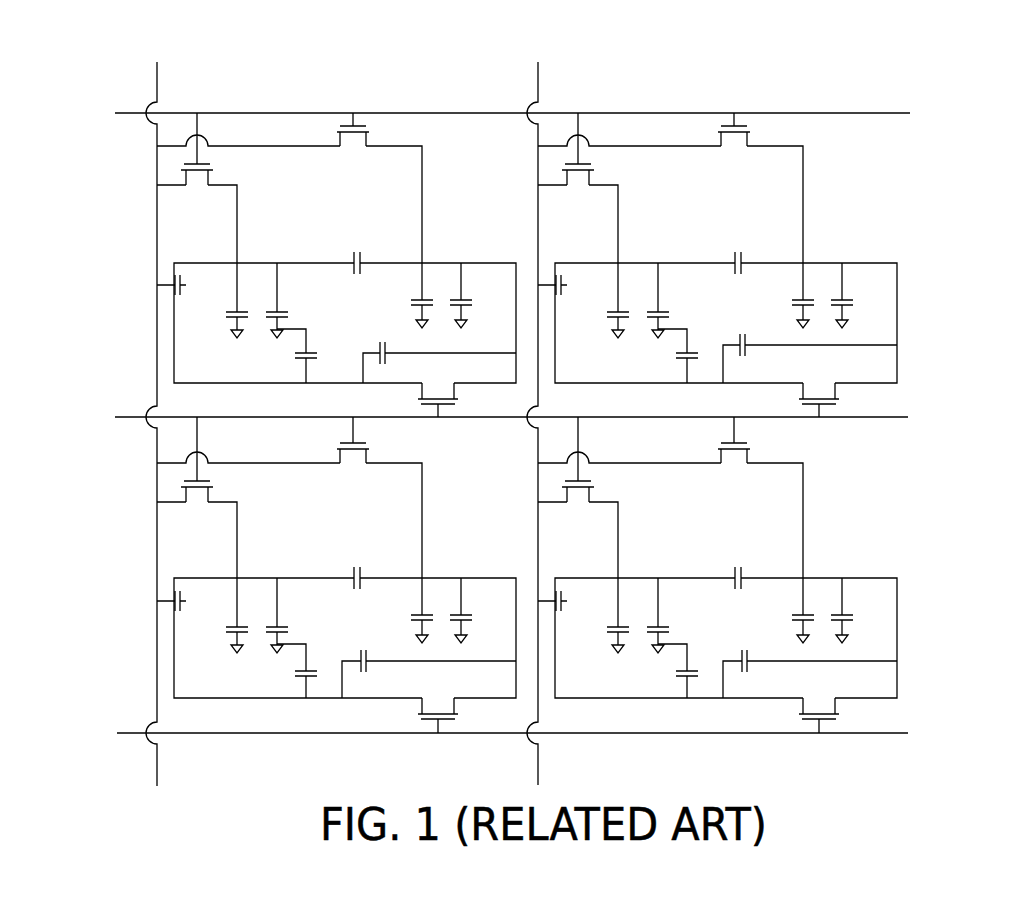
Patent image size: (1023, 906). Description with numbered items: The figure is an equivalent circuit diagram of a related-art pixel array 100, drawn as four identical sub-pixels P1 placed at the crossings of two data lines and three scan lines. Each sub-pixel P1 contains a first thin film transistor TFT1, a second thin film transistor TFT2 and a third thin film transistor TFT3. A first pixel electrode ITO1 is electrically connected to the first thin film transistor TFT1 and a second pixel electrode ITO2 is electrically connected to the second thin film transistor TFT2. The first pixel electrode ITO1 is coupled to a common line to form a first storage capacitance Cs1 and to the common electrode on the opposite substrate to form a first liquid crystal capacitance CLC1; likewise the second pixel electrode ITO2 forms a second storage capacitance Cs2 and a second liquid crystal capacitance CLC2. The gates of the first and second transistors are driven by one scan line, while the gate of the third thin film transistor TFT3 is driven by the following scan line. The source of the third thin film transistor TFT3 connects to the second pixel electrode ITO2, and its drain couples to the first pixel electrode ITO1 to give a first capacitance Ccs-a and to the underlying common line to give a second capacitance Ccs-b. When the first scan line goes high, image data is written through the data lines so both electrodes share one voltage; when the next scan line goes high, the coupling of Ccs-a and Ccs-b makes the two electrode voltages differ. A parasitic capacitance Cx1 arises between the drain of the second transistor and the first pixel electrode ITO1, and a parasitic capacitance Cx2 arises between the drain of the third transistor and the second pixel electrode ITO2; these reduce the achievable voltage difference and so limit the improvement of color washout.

The pixel array 100 is at (928, 798).
The sub-pixel P1 is at (937, 282).
The first thin film transistor TFT1 is at (387, 345).
The second thin film transistor TFT2 is at (480, 345).
The third thin film transistor TFT3 is at (629, 546).
The first pixel electrode ITO1 is at (488, 465).
The second pixel electrode ITO2 is at (628, 465).
The parasitic capacitance Cx1 is at (549, 409).
The parasitic capacitance Cx2 is at (619, 504).
The first capacitance Ccs-a is at (383, 444).
The second capacitance Ccs-b is at (473, 513).
The first liquid crystal capacitance CLC1 is at (407, 458).
The second liquid crystal capacitance CLC2 is at (589, 453).
The first storage capacitance Cs1 is at (481, 458).
The second storage capacitance Cs2 is at (667, 453).